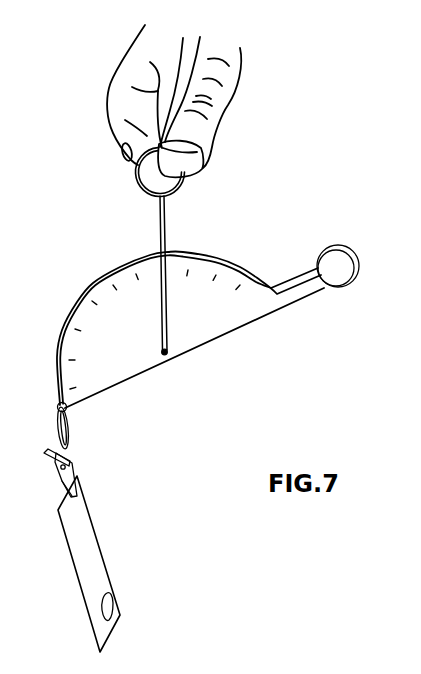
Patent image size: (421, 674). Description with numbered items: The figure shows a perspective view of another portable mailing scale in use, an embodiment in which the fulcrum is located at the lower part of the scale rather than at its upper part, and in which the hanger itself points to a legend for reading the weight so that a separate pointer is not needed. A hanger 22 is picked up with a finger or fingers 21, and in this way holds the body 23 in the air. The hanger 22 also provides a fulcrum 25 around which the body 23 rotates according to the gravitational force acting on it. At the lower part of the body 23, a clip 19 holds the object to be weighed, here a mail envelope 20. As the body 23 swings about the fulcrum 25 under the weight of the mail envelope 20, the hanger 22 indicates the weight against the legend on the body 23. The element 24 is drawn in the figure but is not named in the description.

The clip 19 is at (50, 478).
The tag 20 is at (107, 540).
The hand 21 is at (175, 96).
The ring 22 is at (152, 203).
The protractor scale 23 is at (240, 258).
The pointer stem 24 is at (117, 307).
The pivot 25 is at (175, 343).